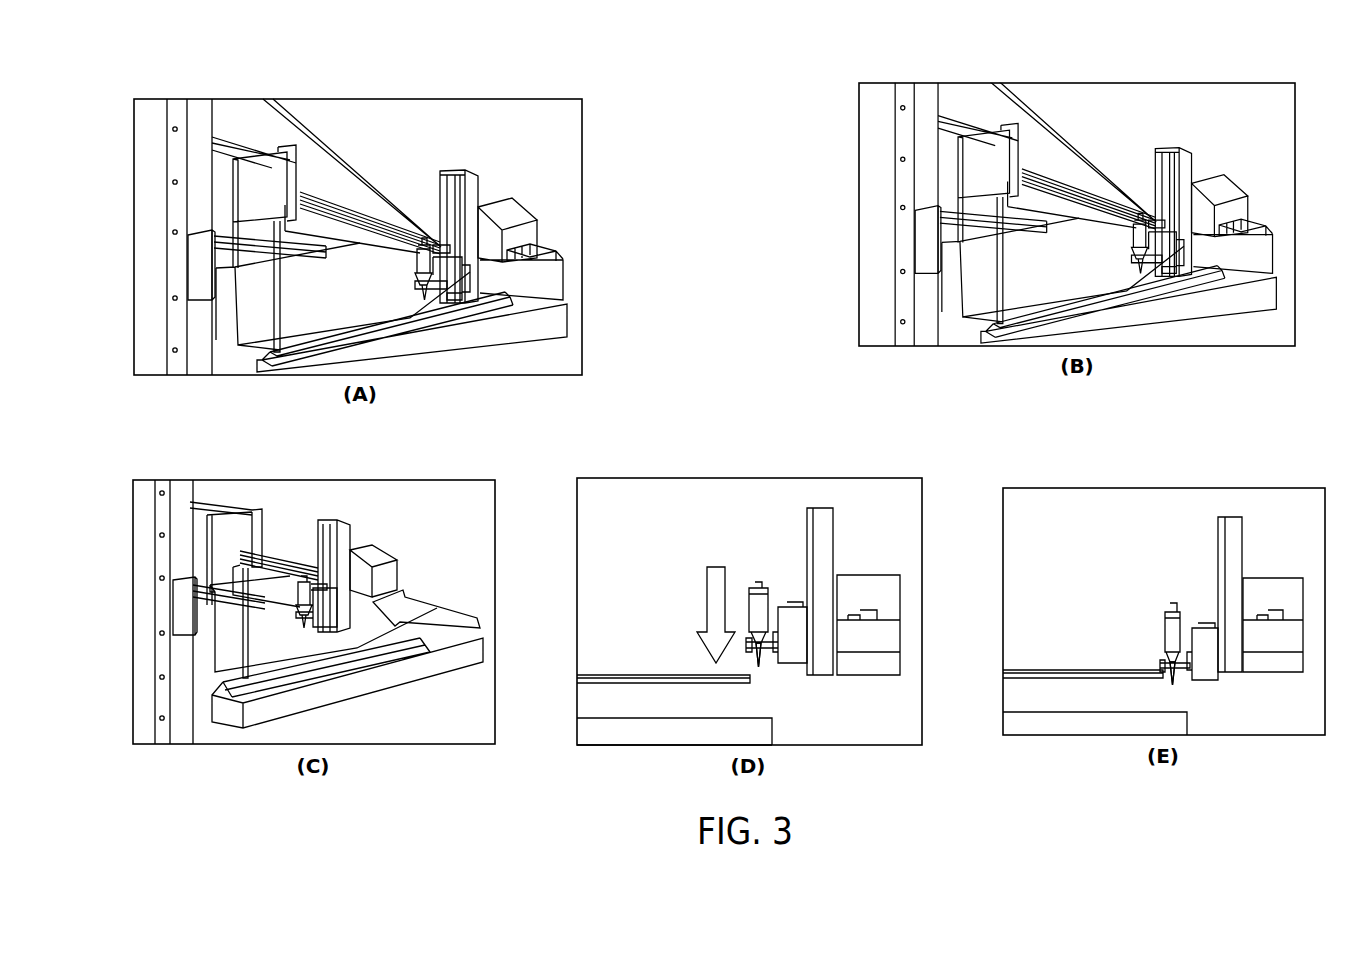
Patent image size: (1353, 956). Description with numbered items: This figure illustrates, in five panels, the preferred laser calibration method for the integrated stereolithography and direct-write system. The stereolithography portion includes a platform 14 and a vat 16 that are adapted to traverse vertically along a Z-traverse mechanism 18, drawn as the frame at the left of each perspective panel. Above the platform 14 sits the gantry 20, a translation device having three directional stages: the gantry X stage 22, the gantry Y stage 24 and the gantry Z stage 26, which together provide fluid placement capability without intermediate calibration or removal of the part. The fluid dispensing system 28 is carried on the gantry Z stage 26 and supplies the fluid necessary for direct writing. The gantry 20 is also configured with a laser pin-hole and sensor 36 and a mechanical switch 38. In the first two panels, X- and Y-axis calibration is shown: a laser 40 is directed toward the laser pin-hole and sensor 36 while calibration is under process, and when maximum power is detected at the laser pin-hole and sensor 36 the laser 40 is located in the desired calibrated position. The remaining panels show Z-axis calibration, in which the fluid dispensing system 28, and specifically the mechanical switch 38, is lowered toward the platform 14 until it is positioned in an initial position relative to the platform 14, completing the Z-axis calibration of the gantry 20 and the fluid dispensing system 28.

The platform 14 is at (260, 308).
The vat 16 is at (607, 745).
The Z-traverse mechanism 18 is at (145, 222).
The gantry 20 is at (362, 192).
The gantry X stage 22 is at (510, 337).
The gantry Y stage 24 is at (276, 565).
The gantry Z stage 26 is at (452, 173).
The fluid dispensing system 28 is at (410, 275).
The laser pin-hole and sensor 36 is at (440, 245).
The mechanical switch 38 is at (748, 653).
The laser 40 is at (303, 132).